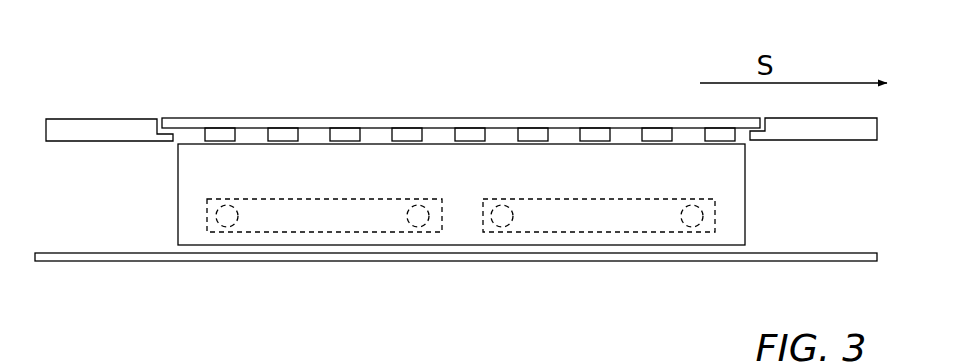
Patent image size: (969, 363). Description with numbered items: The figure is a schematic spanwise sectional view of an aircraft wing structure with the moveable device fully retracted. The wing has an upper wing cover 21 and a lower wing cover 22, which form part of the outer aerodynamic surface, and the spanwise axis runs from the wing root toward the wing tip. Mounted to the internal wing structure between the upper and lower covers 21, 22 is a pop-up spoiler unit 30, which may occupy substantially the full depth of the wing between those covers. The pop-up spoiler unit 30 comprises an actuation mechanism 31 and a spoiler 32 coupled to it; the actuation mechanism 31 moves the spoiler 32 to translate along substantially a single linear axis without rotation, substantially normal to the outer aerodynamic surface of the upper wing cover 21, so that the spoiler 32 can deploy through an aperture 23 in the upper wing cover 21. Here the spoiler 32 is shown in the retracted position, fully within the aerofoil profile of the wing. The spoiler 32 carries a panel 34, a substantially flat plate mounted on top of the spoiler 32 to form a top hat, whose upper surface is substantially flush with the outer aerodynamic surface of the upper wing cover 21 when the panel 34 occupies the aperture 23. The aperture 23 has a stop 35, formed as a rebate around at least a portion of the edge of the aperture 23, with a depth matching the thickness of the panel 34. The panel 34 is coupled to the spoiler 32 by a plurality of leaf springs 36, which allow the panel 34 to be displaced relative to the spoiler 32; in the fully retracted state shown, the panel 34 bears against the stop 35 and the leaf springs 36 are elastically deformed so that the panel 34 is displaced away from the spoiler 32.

The upper wing cover 21 is at (132, 118).
The lower wing cover 22 is at (212, 257).
The aperture 23 is at (157, 111).
The pop-up spoiler unit 30 is at (162, 238).
The actuation mechanism 31 is at (552, 217).
The spoiler 32 is at (410, 163).
The panel 34 is at (183, 118).
The stop 35 is at (157, 156).
The leaf springs 36 is at (412, 137).